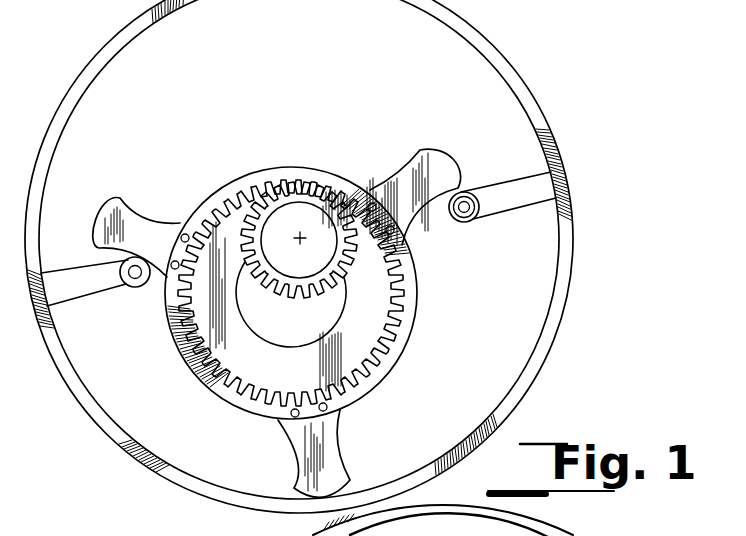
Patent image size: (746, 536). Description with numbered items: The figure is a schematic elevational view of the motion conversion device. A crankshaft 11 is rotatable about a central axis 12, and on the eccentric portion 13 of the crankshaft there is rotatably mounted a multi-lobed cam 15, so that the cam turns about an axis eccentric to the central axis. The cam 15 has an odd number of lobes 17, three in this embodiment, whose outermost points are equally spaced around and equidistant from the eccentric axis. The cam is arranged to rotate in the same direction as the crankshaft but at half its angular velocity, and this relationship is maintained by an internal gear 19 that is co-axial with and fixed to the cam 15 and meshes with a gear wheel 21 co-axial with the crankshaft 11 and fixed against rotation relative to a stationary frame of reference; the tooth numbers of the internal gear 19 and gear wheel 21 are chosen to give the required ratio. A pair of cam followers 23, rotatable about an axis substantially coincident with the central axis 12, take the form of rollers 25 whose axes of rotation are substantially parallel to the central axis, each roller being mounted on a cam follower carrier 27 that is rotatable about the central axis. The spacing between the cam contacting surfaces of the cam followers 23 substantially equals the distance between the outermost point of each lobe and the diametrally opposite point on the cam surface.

The crankshaft 11 is at (302, 207).
The central axis 12 is at (300, 238).
The eccentric portion 13 is at (315, 335).
The multi-lobed cam 15 is at (276, 306).
The lobes 17 is at (97, 213).
The internal gear 19 is at (418, 293).
The gear wheel 21 is at (350, 246).
The cam followers 23 is at (134, 298).
The rollers 25 is at (467, 191).
The cam follower carrier 27 is at (563, 146).